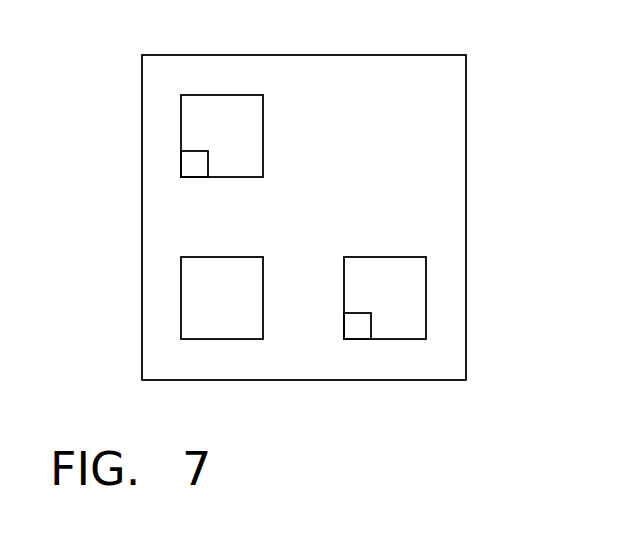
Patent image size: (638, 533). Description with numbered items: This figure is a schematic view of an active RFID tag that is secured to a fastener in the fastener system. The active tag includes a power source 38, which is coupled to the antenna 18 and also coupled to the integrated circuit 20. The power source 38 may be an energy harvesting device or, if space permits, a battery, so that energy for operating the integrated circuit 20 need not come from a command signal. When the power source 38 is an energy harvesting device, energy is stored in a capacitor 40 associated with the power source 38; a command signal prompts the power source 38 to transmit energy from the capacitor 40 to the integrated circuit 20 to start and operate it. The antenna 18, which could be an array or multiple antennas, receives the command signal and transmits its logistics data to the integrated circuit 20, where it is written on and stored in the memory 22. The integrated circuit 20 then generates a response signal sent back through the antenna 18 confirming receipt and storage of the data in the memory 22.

The power source 38 is at (225, 129).
The capacitor 40 is at (192, 164).
The antenna 18 is at (180, 297).
The integrated circuit 20 is at (400, 296).
The memory 22 is at (359, 329).